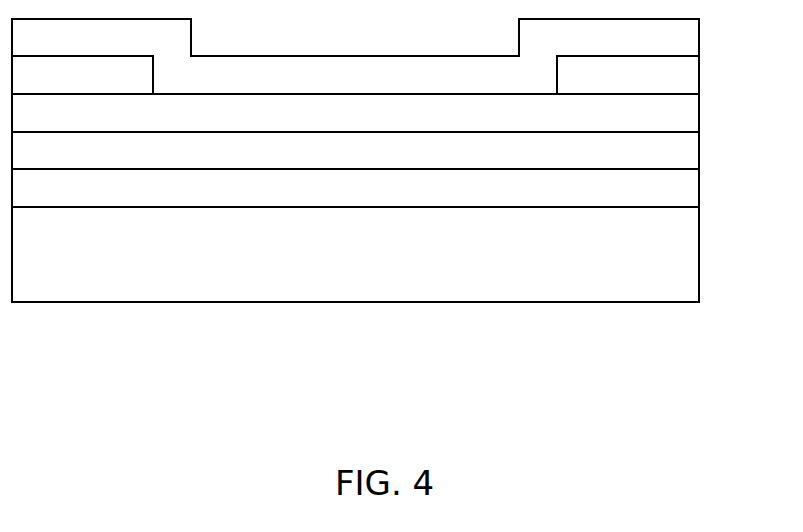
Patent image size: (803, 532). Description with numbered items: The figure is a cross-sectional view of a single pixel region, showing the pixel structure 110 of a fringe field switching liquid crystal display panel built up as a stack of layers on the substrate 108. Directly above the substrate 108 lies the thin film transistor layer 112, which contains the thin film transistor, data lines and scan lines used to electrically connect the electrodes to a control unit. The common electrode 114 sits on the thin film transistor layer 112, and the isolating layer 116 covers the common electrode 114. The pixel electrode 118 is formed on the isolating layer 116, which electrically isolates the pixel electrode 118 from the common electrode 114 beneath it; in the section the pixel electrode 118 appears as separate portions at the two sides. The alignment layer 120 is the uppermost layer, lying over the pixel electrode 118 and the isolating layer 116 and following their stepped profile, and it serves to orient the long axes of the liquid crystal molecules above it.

The substrate 108 is at (609, 277).
The pixel structure 110 is at (707, 17).
The thin film transistor layer 112 is at (609, 199).
The common electrode 114 is at (609, 161).
The isolating layer 116 is at (609, 123).
The pixel electrode 118 is at (609, 85).
The alignment layer 120 is at (609, 50).